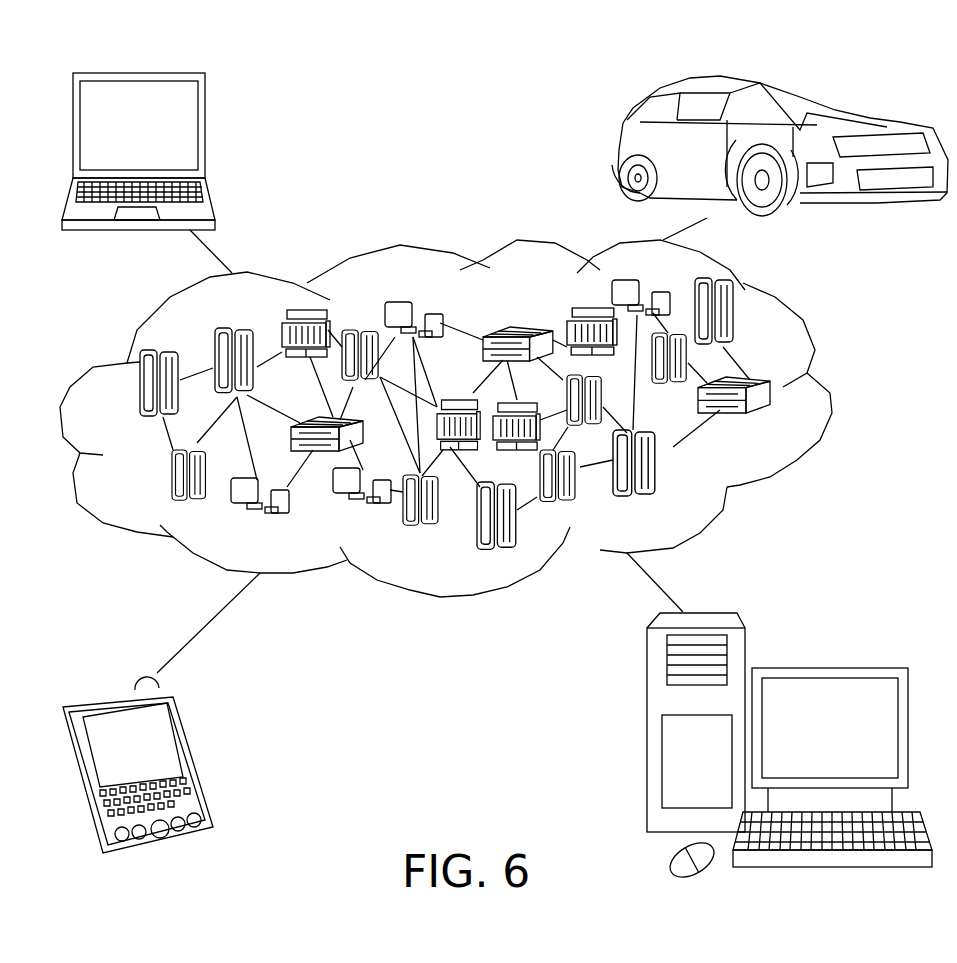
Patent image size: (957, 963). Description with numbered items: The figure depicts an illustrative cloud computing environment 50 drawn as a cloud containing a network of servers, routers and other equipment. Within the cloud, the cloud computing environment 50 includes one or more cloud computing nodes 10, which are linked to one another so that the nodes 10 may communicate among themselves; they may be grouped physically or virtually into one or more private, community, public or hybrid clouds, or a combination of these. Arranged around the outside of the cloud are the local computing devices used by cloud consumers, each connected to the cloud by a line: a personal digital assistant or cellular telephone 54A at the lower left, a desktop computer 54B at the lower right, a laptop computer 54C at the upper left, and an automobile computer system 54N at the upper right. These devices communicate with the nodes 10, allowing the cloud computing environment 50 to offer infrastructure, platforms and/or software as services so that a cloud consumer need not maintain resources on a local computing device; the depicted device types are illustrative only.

The cloud computing nodes 10 is at (472, 418).
The cloud computing environment 50 is at (829, 393).
The personal digital assistant or cellular telephone 54A is at (198, 754).
The desktop computer 54B is at (827, 668).
The laptop computer 54C is at (205, 131).
The automobile computer system 54N is at (620, 150).